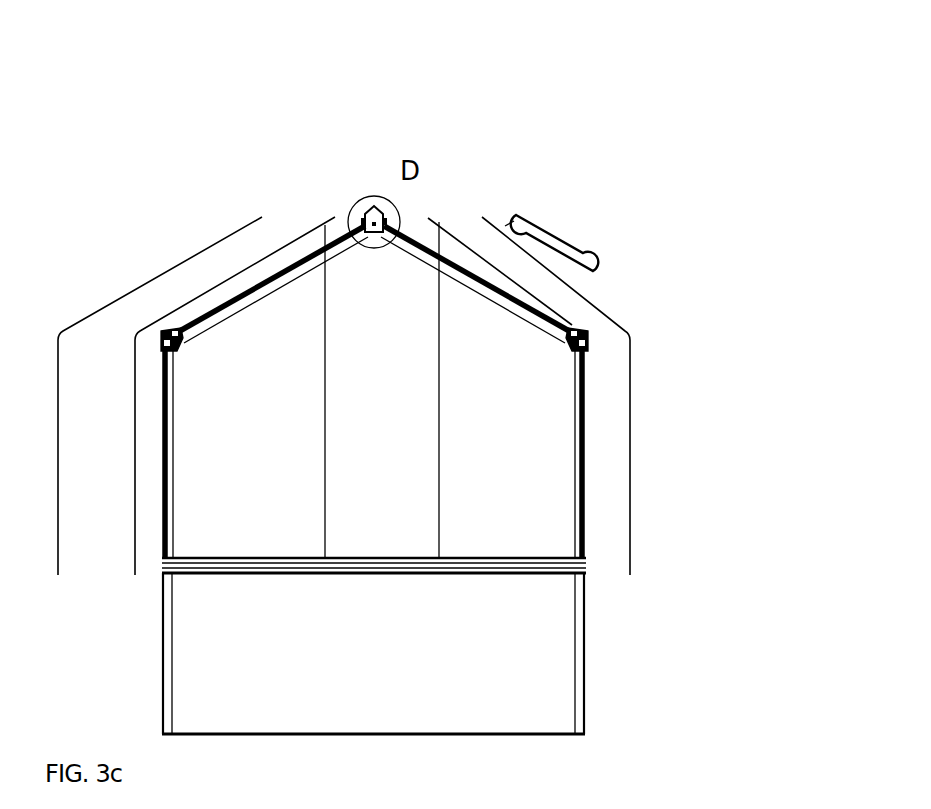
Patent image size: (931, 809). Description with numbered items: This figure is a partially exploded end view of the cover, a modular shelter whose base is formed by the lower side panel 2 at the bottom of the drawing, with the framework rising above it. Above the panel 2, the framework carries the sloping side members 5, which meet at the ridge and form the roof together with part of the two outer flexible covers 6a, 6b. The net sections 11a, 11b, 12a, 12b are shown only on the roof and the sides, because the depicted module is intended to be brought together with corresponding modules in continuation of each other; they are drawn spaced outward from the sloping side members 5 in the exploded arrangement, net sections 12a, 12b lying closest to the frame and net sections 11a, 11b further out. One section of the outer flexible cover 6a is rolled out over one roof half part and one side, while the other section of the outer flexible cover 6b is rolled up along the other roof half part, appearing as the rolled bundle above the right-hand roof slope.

The lower side panel 2 is at (548, 702).
The sloping side member 5 is at (303, 243).
The outer flexible cover 6a is at (90, 303).
The outer flexible cover 6b is at (555, 230).
The net section 11a is at (128, 377).
The net section 11b is at (633, 360).
The net section 12a is at (218, 280).
The net section 12b is at (462, 233).